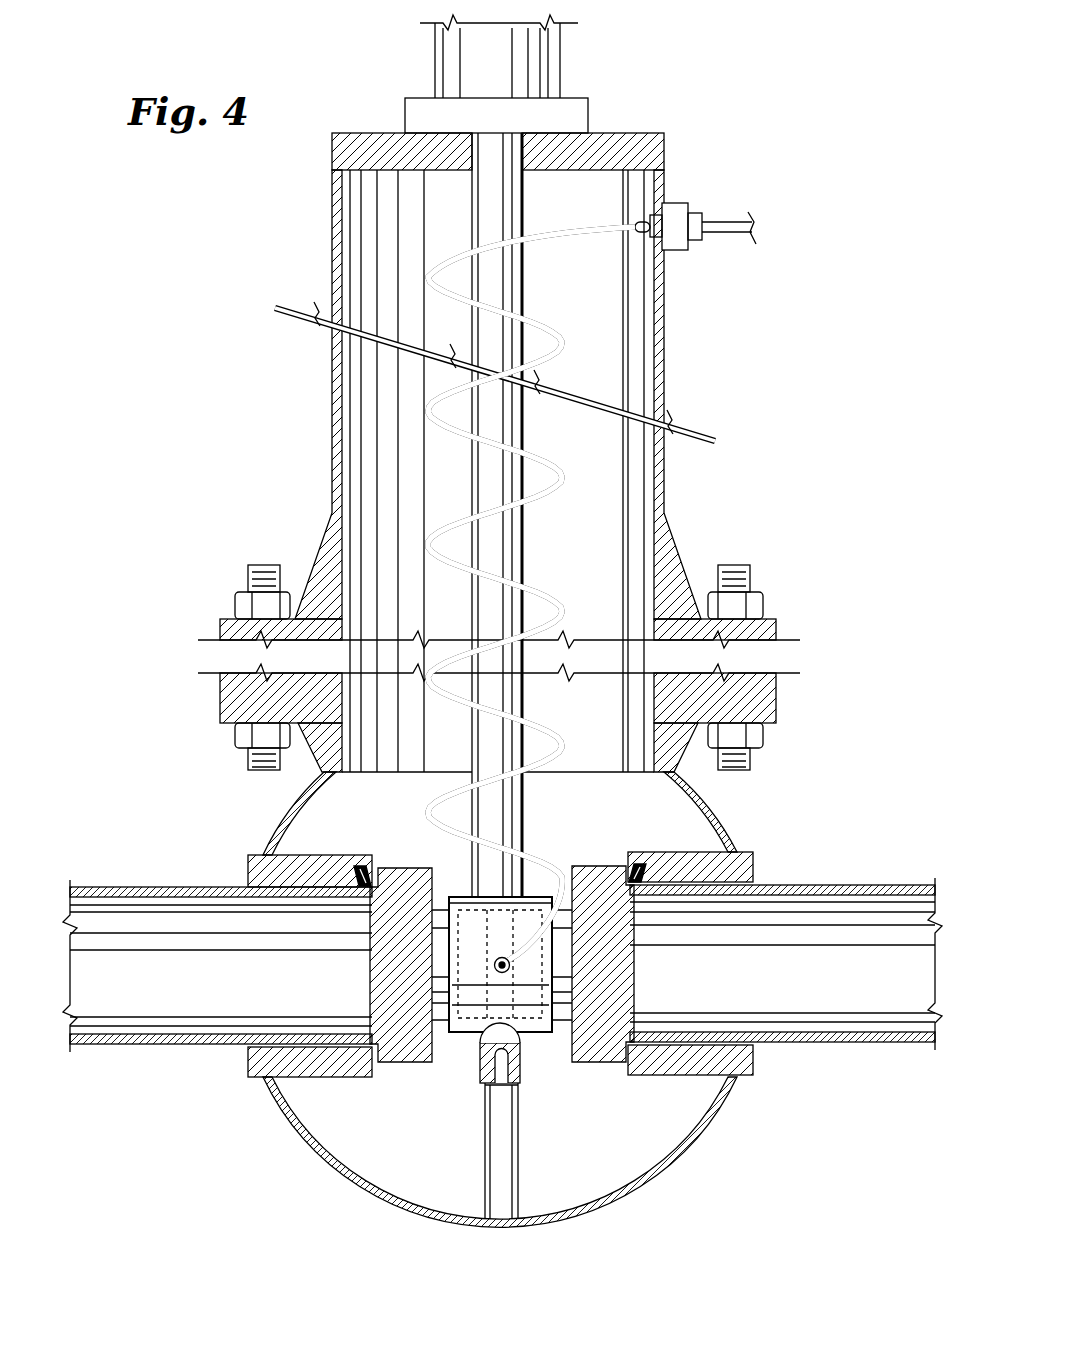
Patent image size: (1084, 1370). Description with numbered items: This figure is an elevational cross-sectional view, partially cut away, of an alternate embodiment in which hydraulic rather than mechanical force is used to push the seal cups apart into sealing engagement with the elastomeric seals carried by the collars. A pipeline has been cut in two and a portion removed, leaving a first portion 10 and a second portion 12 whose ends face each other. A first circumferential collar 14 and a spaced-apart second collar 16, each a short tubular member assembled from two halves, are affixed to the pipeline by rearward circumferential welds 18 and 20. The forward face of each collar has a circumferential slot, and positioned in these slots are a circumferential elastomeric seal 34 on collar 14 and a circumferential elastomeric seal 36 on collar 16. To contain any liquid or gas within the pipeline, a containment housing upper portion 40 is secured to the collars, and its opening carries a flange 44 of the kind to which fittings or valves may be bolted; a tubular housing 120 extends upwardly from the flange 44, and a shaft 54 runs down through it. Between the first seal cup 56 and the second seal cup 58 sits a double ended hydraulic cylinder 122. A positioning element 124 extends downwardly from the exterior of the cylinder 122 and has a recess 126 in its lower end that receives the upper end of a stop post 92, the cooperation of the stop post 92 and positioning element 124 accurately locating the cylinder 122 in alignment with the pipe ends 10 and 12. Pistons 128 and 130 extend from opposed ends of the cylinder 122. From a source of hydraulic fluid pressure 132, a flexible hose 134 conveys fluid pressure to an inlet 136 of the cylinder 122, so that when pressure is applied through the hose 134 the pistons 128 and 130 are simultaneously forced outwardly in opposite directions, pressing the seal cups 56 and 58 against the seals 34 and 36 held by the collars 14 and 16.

The first portion of the pipeline 10 is at (107, 887).
The second portion of the pipeline 12 is at (885, 887).
The first circumferential collar 14 is at (323, 855).
The second collar 16 is at (680, 856).
The rearward circumferential weld 18 is at (242, 1053).
The rearward circumferential weld 20 is at (760, 1045).
The circumferential elastomeric seal 34 is at (353, 867).
The circumferential elastomeric seal 36 is at (638, 847).
The containment housing upper portion 40 is at (282, 822).
The flange 44 is at (220, 700).
The shaft 54 is at (510, 290).
The first seal cup 56 is at (377, 980).
The second seal cup 58 is at (622, 982).
The stop post 92 is at (502, 1160).
The tubular housing 120 is at (668, 370).
The double ended hydraulic cylinder 122 is at (460, 1033).
The positioning element 124 is at (480, 1067).
The recess 126 is at (520, 1087).
The piston 128 is at (440, 918).
The piston 130 is at (563, 1027).
The source of hydraulic fluid pressure 132 is at (725, 218).
The flexible hose 134 is at (533, 508).
The inlet 136 is at (512, 950).